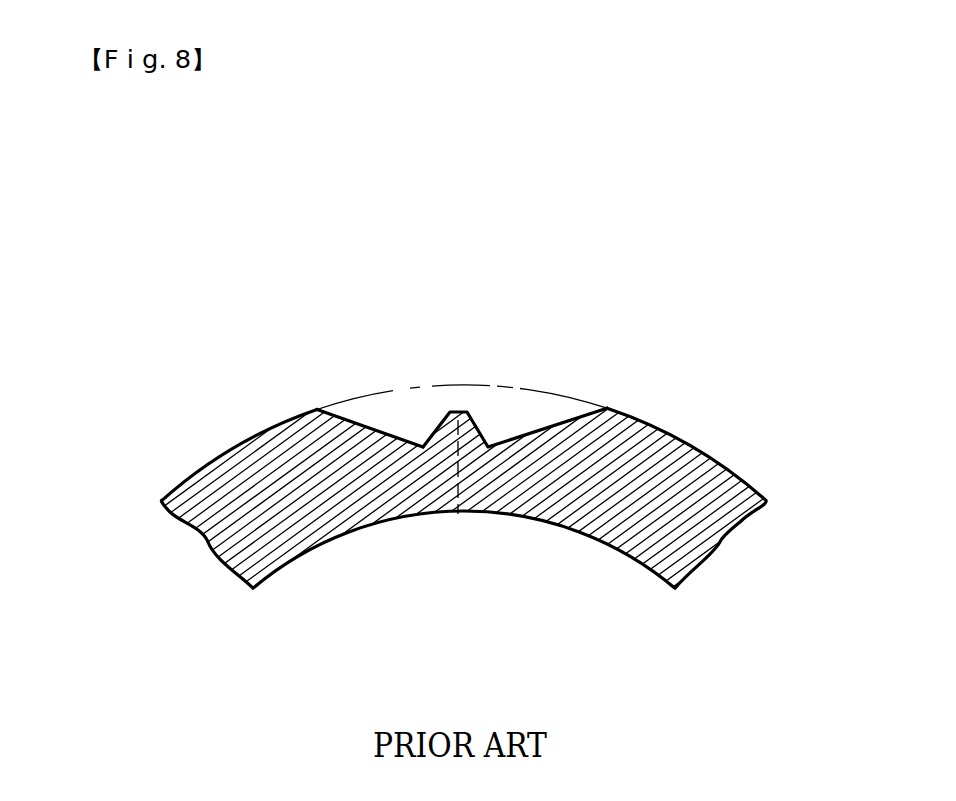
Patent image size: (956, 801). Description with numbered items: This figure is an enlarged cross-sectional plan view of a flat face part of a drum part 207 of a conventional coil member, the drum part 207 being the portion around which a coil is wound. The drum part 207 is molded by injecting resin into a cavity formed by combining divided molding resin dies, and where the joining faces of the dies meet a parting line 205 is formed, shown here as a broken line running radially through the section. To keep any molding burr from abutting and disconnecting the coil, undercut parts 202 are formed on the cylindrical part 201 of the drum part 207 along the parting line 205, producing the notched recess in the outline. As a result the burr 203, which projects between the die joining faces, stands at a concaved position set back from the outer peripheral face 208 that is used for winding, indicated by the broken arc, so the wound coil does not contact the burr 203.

The cylindrical part 201 is at (298, 410).
The undercut parts 202 is at (375, 427).
The burr 203 is at (478, 420).
The parting line 205 is at (458, 485).
The drum part 207 is at (640, 463).
The outer peripheral face 208 is at (453, 385).